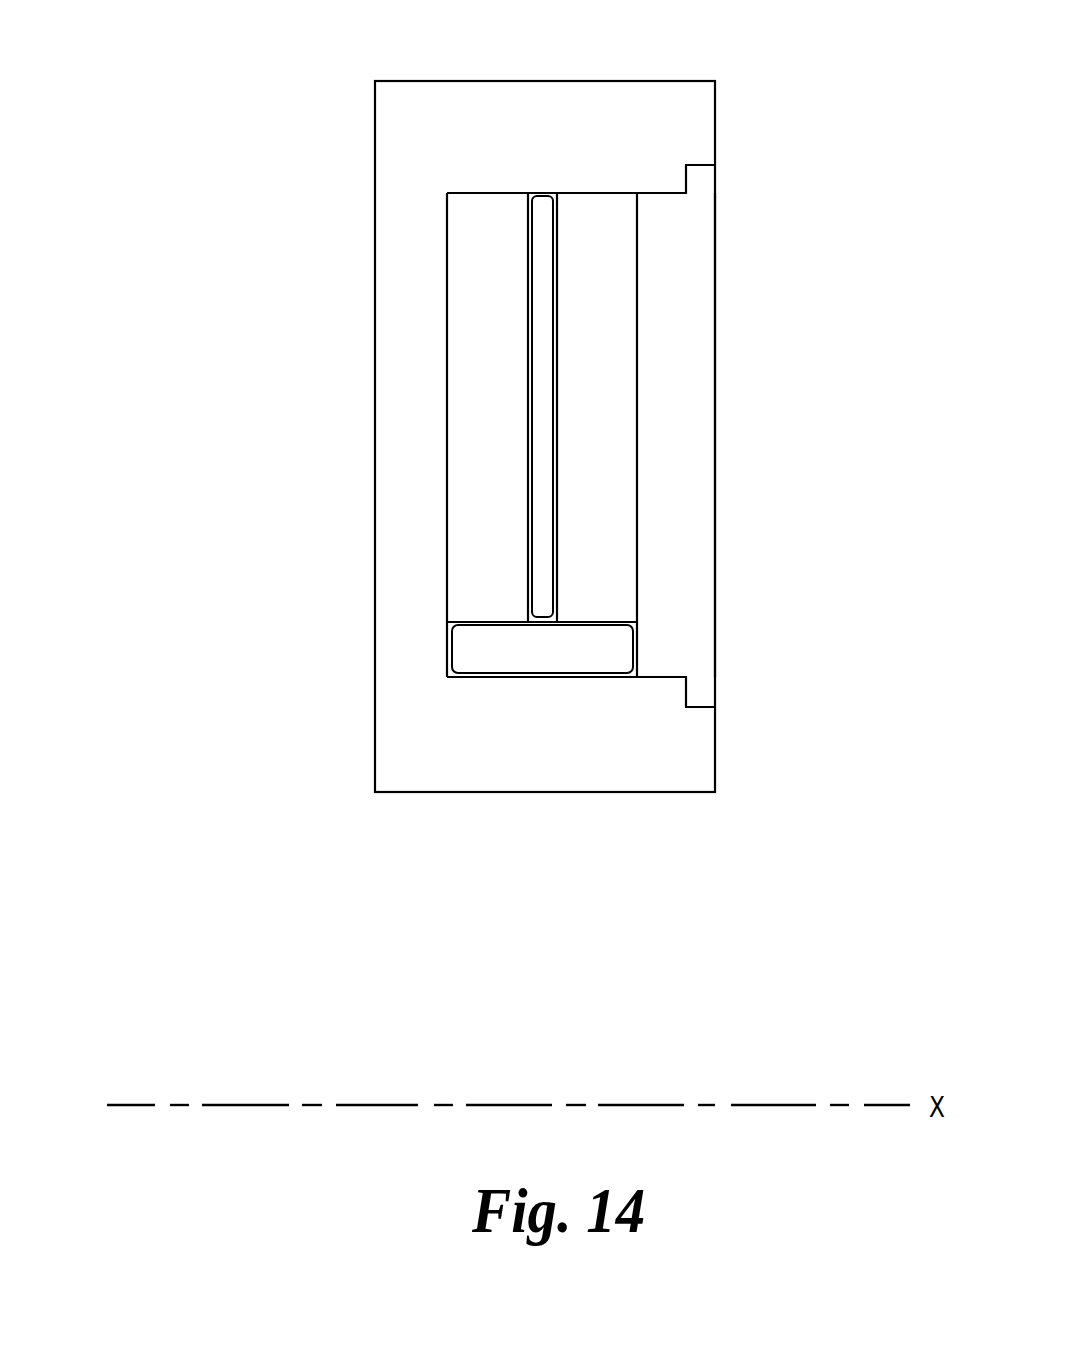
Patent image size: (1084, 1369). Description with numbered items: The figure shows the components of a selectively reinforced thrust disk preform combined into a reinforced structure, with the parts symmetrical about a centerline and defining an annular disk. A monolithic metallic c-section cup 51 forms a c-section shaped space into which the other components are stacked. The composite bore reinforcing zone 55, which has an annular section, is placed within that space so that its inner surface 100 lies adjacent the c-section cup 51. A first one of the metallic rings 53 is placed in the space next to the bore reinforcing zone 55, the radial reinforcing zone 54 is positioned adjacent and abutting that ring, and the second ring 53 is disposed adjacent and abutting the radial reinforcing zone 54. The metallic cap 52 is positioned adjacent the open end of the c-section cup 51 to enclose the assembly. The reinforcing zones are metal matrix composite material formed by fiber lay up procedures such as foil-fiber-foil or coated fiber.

The metallic c-section cup 51 is at (624, 110).
The metallic cap 52 is at (688, 573).
The metallic rings 53 is at (475, 213).
The radial reinforcing zone 54 is at (547, 213).
The bore reinforcing zone 55 is at (532, 653).
The inner surface 100 is at (590, 680).